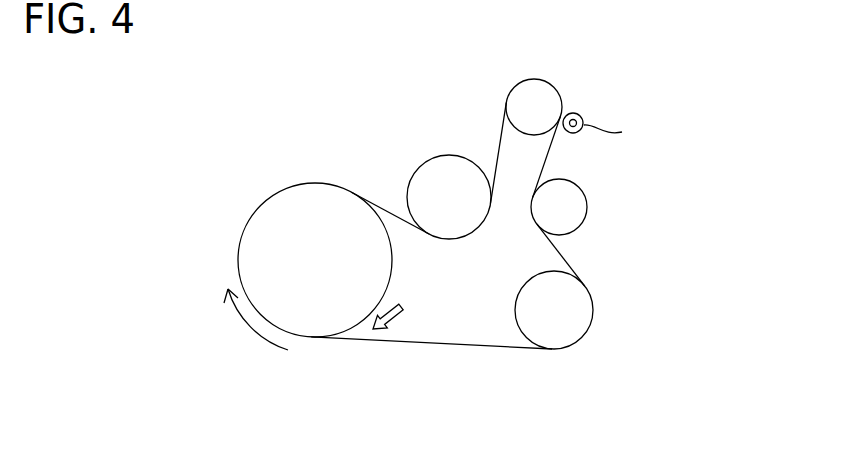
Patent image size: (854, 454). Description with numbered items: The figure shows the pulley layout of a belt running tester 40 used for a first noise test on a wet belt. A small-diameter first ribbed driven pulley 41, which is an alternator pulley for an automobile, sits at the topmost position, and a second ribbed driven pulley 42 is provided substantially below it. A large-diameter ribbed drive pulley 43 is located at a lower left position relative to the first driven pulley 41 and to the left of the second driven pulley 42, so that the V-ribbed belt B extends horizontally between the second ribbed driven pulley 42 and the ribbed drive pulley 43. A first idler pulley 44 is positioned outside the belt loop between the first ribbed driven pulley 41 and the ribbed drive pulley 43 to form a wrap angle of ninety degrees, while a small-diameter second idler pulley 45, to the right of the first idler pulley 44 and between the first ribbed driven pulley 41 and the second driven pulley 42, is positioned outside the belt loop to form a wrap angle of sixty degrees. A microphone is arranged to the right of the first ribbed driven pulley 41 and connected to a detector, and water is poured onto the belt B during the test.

The belt running tester 40 is at (318, 80).
The first ribbed driven pulley 41 is at (538, 88).
The second ribbed driven pulley 42 is at (575, 322).
The ribbed drive pulley 43 is at (270, 213).
The first idler pulley 44 is at (450, 167).
The second idler pulley 45 is at (575, 207).
The V-ribbed belt B is at (467, 349).